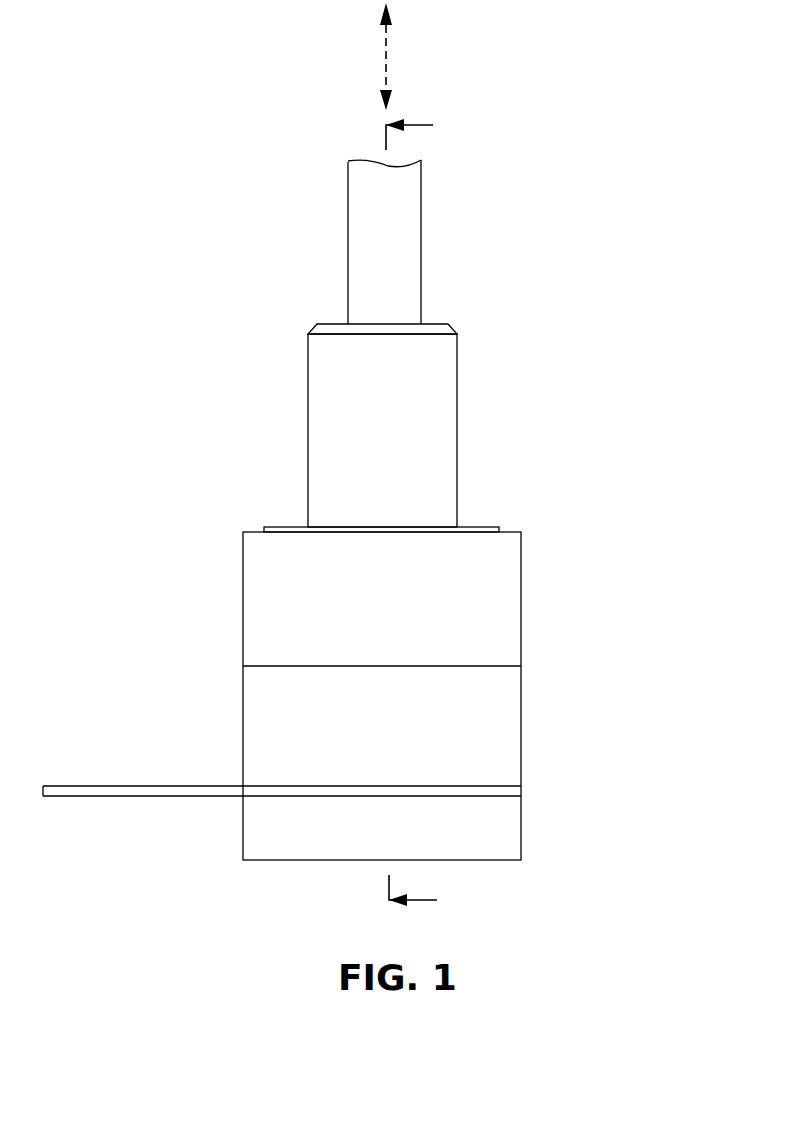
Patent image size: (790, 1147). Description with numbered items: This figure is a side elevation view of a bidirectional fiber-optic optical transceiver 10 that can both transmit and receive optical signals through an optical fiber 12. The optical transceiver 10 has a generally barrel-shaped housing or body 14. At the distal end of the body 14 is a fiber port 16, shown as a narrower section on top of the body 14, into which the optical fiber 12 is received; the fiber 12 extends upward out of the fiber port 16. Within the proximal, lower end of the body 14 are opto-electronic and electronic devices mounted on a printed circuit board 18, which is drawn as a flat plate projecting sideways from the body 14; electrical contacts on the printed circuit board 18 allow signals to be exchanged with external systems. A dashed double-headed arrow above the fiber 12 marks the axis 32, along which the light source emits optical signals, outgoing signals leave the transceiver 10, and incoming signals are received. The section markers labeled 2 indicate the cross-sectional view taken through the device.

The optical transceiver 10 is at (656, 323).
The optical fiber 12 is at (348, 241).
The body 14 is at (243, 621).
The fiber port 16 is at (308, 421).
The printed circuit board 18 is at (114, 786).
The axis 32 is at (386, 58).
The section line 2- 2 is at (423, 513).